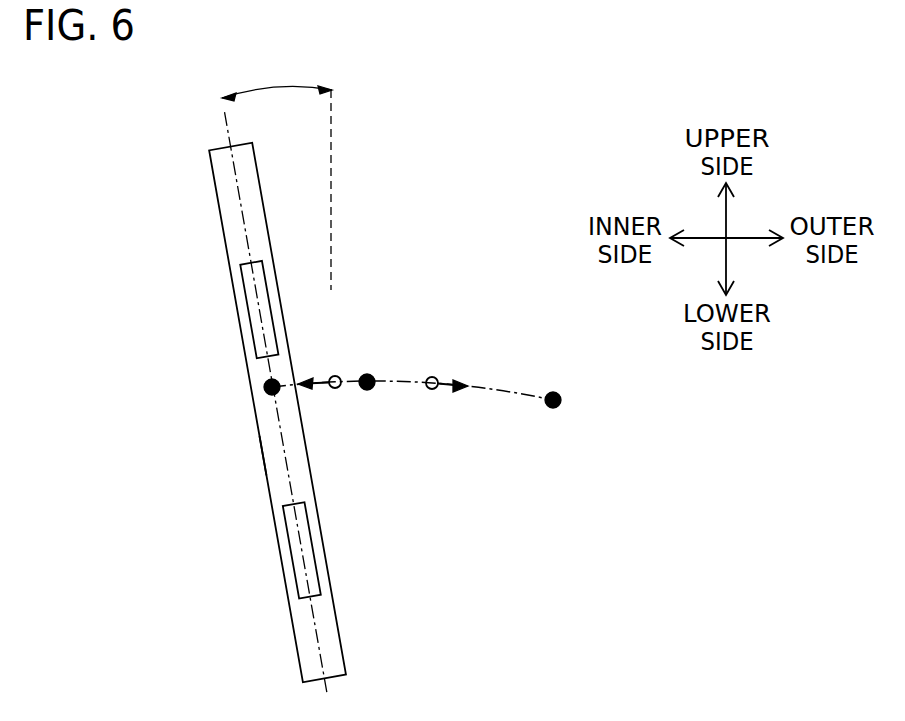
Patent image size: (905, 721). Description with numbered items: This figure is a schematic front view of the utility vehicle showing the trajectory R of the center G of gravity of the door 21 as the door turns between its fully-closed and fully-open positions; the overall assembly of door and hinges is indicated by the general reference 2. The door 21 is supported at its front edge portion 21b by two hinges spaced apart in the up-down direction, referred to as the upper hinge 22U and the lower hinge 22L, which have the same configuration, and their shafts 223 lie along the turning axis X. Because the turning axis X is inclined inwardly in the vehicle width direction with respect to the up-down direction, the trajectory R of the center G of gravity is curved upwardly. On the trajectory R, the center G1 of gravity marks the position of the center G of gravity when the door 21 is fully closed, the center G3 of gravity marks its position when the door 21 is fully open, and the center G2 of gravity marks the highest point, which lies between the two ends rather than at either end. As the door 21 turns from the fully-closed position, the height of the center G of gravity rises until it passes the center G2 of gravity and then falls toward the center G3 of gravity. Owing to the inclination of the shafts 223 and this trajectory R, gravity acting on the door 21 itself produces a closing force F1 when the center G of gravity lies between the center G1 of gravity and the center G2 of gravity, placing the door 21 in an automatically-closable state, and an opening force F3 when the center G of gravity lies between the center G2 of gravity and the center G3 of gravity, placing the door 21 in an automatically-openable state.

The work vehicle / cabin assembly 2 is at (408, 128).
The door 21 is at (215, 197).
The front edge portion 21b is at (272, 455).
The shafts 223 is at (204, 430).
The upper hinge 22U is at (243, 293).
The lower hinge 22L is at (292, 555).
The center of gravity G is at (370, 355).
The center of gravity at fully-closed position G1 is at (265, 383).
The center of gravity at highest point G2 is at (370, 374).
The center of gravity at fully-open position G3 is at (553, 392).
The closing force F1 is at (312, 390).
The opening force F3 is at (457, 390).
The trajectory R is at (498, 388).
The turning axis X is at (224, 115).